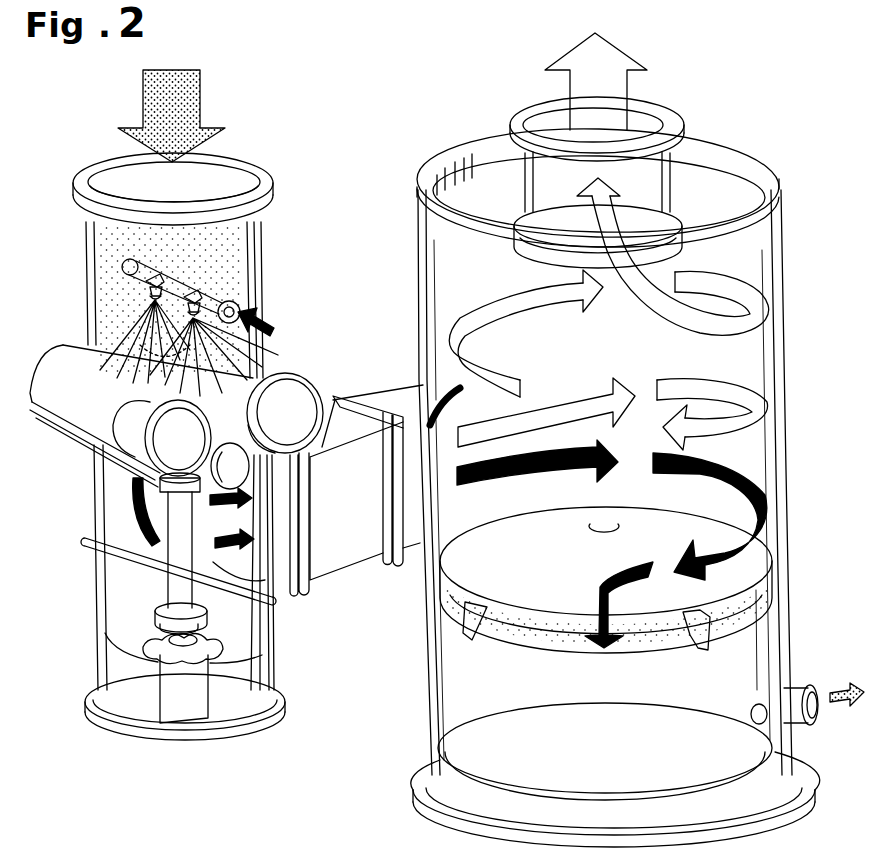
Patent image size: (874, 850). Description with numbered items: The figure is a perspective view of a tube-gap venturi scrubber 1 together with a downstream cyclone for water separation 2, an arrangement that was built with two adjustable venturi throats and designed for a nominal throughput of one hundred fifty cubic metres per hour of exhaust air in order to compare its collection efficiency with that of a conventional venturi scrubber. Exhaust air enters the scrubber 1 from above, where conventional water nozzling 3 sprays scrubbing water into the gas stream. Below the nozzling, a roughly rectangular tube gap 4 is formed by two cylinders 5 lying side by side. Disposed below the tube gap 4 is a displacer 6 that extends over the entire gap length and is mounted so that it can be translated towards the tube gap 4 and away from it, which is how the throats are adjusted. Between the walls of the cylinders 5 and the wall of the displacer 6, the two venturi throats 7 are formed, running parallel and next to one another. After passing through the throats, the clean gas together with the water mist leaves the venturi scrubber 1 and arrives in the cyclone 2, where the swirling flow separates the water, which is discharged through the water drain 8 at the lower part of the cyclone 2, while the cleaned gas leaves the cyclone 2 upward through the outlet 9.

The venturi scrubber 1 is at (82, 178).
The cyclone for water separation 2 is at (733, 148).
The water nozzling 3 is at (243, 332).
The tube gap 4 is at (240, 424).
The cylinders 5 is at (57, 383).
The displacer 6 is at (278, 490).
The venturi throats 7 is at (287, 470).
The water drain 8 is at (807, 690).
The outlet 9 is at (515, 110).